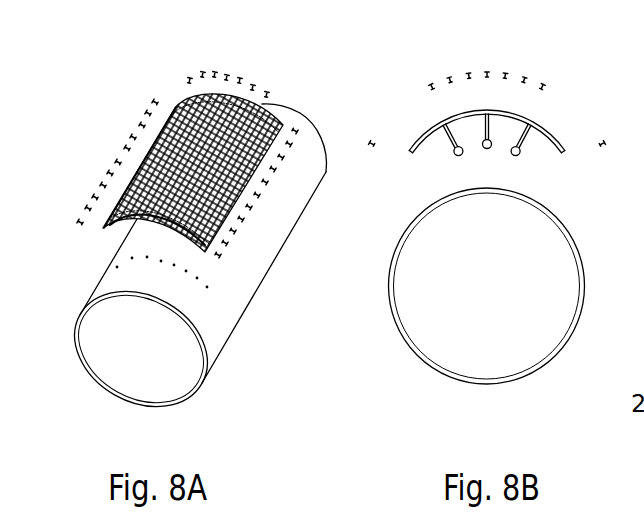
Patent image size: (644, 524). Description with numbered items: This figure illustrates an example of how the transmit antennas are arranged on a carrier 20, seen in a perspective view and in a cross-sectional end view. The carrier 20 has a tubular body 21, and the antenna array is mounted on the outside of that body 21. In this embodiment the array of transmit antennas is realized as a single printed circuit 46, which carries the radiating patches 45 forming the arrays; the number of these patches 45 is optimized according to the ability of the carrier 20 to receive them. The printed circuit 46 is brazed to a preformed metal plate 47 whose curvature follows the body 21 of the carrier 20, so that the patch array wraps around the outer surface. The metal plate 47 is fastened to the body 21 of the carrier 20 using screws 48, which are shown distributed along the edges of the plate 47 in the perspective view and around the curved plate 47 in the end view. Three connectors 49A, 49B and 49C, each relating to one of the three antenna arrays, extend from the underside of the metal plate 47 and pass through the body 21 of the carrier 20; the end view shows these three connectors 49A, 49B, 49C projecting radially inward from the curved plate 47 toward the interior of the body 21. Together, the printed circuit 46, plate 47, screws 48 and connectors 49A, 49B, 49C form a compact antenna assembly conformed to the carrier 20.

In FIG. 8A, the carrier 20 is at (189, 220).
In FIG. 8B, the carrier 20 is at (489, 215).
In FIG. 8A, the body of the carrier 21 is at (233, 334).
In FIG. 8B, the body of the carrier 21 is at (540, 362).
In FIG. 8A, the patches 45 is at (175, 107).
In FIG. 8A, the printed circuit 46 is at (262, 111).
In FIG. 8A, the preformed metal plate 47 is at (277, 113).
In FIG. 8B, the preformed metal plate 47 is at (550, 132).
In FIG. 8A, the screws 48 is at (215, 73).
In FIG. 8B, the screws 48 is at (545, 87).
In FIG. 8B, the first connector 49A is at (438, 166).
In FIG. 8B, the second connector 49B is at (508, 164).
In FIG. 8B, the third connector 49C is at (542, 160).